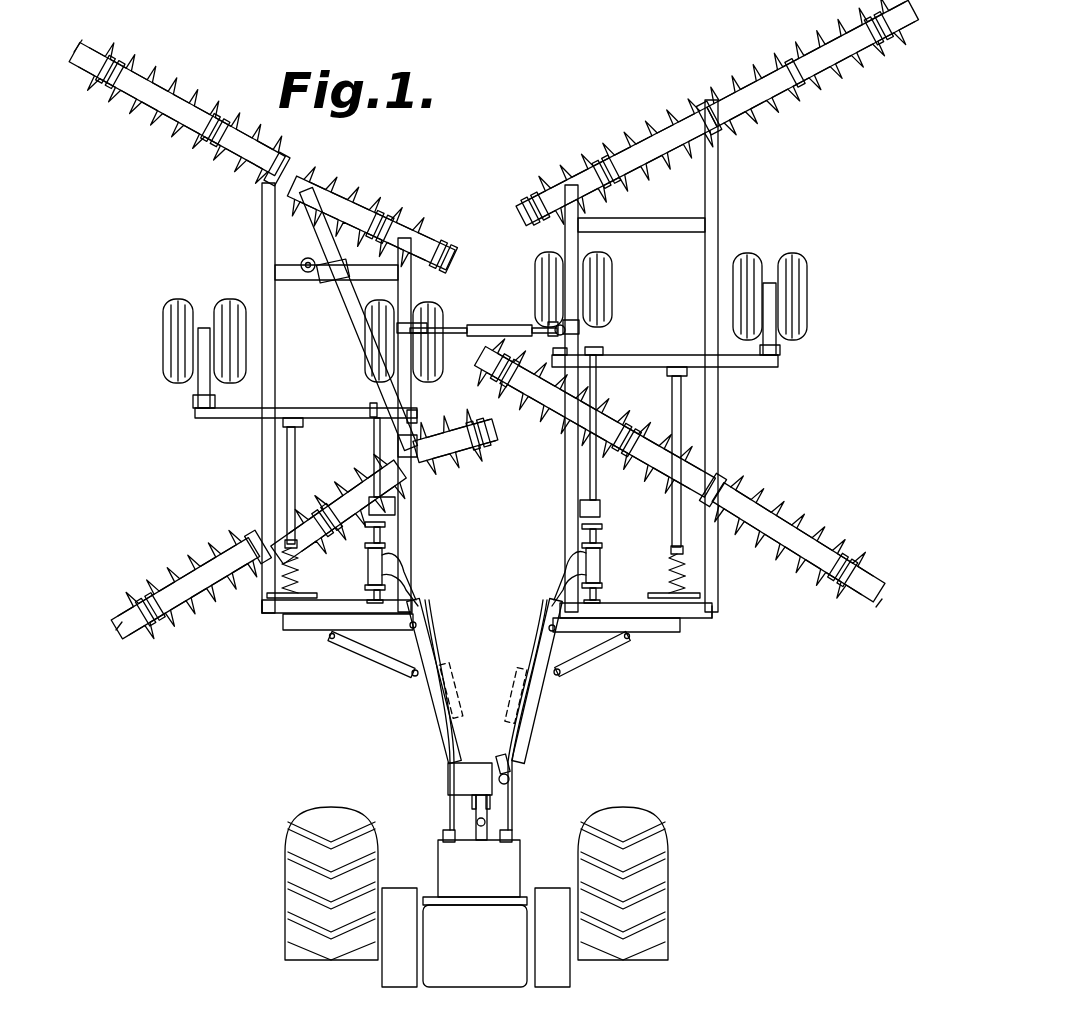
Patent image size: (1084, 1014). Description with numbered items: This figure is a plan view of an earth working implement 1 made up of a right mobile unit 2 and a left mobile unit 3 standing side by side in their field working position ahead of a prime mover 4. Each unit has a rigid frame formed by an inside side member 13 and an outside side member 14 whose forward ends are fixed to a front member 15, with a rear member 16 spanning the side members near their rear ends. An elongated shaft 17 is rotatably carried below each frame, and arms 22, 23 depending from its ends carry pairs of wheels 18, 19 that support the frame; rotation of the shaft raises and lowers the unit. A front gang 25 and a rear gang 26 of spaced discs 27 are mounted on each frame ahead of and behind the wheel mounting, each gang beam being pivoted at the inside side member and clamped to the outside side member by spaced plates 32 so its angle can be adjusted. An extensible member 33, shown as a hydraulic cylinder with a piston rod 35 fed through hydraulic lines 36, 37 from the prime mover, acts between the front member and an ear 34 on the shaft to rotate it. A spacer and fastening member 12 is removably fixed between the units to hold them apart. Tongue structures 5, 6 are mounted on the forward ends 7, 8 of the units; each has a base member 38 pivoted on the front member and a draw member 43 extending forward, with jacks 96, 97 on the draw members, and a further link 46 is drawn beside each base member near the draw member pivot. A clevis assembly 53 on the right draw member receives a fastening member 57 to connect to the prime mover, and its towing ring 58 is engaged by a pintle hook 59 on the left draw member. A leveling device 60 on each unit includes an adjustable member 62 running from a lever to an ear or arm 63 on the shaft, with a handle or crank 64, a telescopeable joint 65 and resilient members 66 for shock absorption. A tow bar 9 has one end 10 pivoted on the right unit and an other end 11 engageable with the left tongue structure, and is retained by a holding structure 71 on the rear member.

The earth working implement 1 is at (295, 697).
The right mobile unit 2 is at (249, 469).
The left mobile unit 3 is at (727, 433).
The prime mover 4 is at (276, 881).
The tongue structure 5 is at (417, 702).
The tongue structure 6 is at (558, 694).
The forward end 7 is at (262, 615).
The forward end 8 is at (712, 618).
The tow bar 9 is at (346, 329).
The one end 10 is at (410, 442).
The other end 11 is at (316, 255).
The spacer and fastening member 12 is at (511, 318).
The inside side member 13 is at (411, 540).
The outside side member 14 is at (262, 500).
The front member 15 is at (316, 603).
The rear member 16 is at (300, 281).
The elongated shaft 17 is at (338, 425).
The pair of wheels 18 is at (185, 295).
The pair of wheels 19 is at (426, 318).
The arm 22 is at (196, 392).
The arm 23 is at (411, 413).
The front gang 25 is at (118, 631).
The rear gang 26 is at (74, 46).
The discs 27 is at (296, 168).
The spaced plates 32 is at (711, 100).
The extensible member 33 is at (369, 563).
The ear 34 is at (368, 406).
The piston rod 35 is at (372, 470).
The hydraulic line 36 is at (400, 595).
The hydraulic line 37 is at (400, 566).
The base member 38 is at (312, 632).
The draw member 43 is at (462, 730).
The link 46 is at (380, 676).
The clevis assembly 53 is at (456, 793).
The fastening member 57 is at (487, 822).
The towing ring 58 is at (510, 780).
The pintle hook 59 is at (504, 760).
The leveling device 60 is at (298, 539).
The adjustable member 62 is at (286, 492).
The ear or arm 63 is at (300, 406).
The handle or crank 64 is at (270, 596).
The telescopeable joint 65 is at (282, 552).
The resilient members 66 is at (299, 585).
The holding structure 71 is at (350, 203).
The jack 96 is at (490, 698).
The jack 97 is at (470, 700).